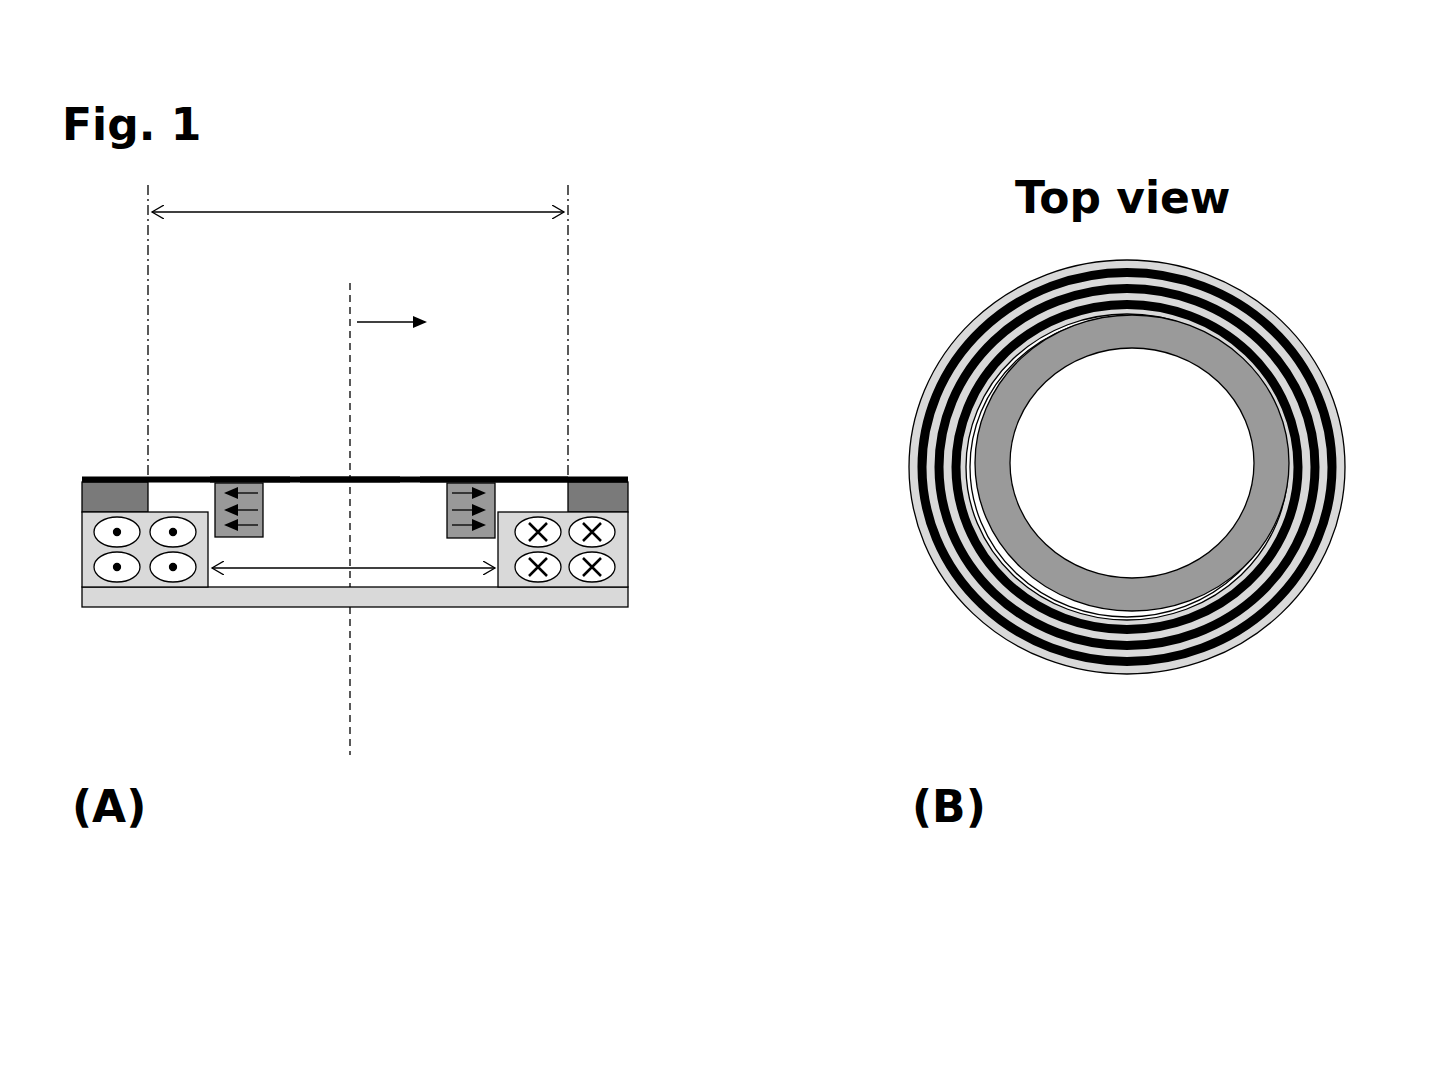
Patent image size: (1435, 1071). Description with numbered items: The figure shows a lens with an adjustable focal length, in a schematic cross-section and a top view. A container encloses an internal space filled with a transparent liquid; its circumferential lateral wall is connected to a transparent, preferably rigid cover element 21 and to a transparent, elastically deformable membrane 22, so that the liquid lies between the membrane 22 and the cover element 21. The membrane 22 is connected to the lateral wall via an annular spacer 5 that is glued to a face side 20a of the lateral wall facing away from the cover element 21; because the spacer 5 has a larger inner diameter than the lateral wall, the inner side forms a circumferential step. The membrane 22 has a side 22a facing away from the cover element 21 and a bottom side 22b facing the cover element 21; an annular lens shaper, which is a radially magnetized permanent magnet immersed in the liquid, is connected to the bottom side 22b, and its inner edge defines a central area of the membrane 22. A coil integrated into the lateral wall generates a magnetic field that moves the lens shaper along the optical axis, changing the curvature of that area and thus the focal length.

The annular spacer 5 is at (638, 492).
The face side 20a is at (515, 476).
The cover element 21 is at (470, 614).
The membrane 22 is at (344, 468).
The vibrating portion outer part 22a is at (435, 476).
The bottom side 22b is at (270, 517).